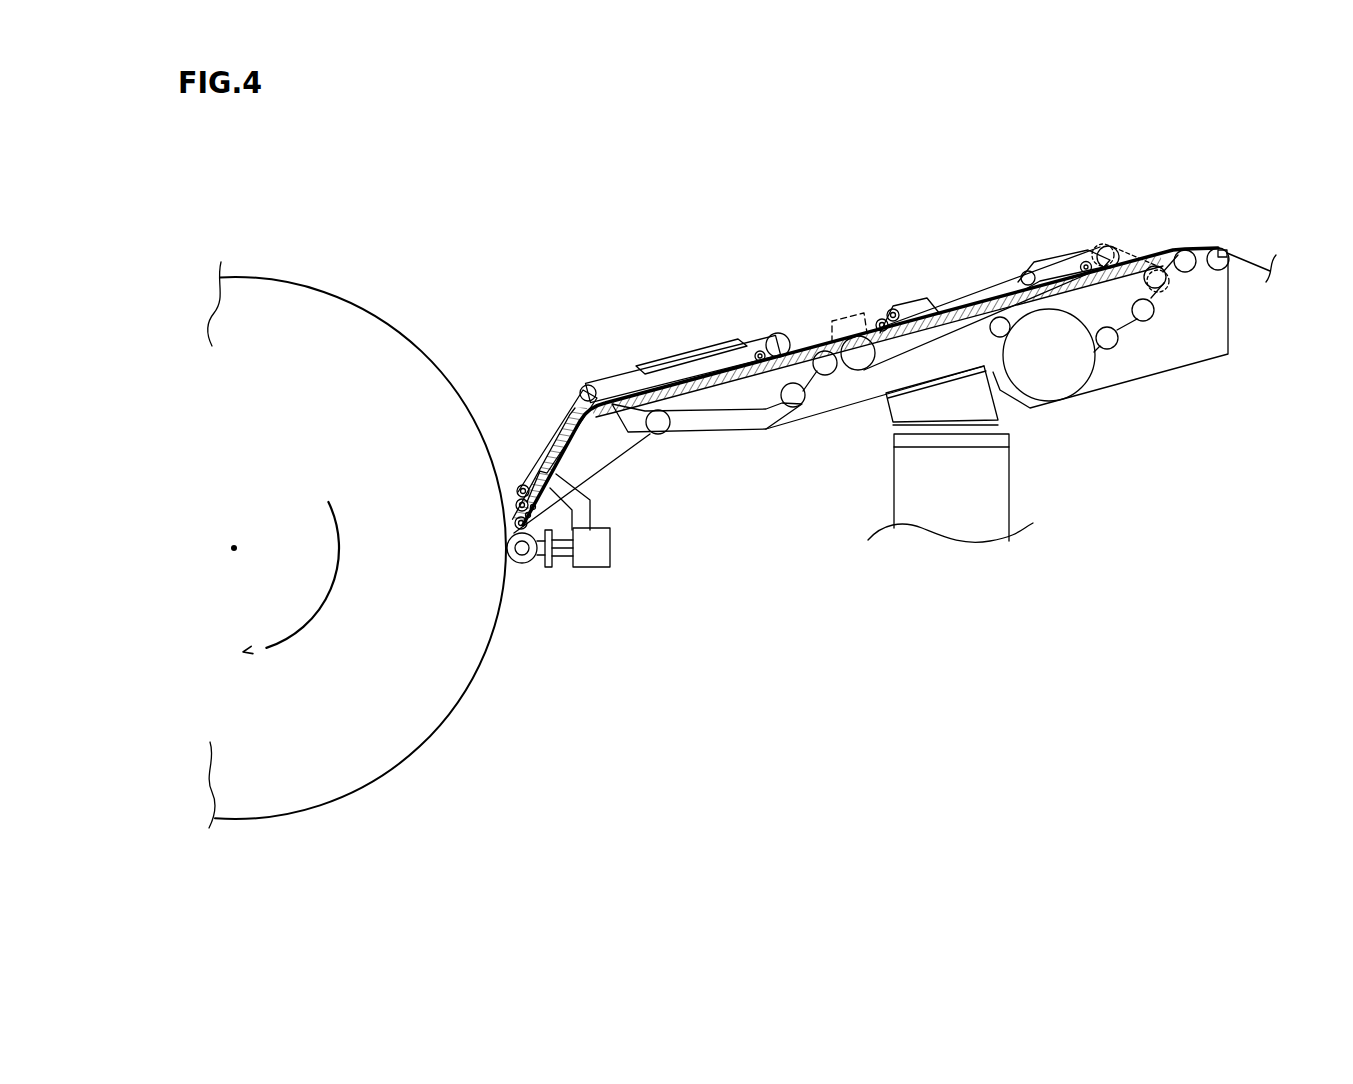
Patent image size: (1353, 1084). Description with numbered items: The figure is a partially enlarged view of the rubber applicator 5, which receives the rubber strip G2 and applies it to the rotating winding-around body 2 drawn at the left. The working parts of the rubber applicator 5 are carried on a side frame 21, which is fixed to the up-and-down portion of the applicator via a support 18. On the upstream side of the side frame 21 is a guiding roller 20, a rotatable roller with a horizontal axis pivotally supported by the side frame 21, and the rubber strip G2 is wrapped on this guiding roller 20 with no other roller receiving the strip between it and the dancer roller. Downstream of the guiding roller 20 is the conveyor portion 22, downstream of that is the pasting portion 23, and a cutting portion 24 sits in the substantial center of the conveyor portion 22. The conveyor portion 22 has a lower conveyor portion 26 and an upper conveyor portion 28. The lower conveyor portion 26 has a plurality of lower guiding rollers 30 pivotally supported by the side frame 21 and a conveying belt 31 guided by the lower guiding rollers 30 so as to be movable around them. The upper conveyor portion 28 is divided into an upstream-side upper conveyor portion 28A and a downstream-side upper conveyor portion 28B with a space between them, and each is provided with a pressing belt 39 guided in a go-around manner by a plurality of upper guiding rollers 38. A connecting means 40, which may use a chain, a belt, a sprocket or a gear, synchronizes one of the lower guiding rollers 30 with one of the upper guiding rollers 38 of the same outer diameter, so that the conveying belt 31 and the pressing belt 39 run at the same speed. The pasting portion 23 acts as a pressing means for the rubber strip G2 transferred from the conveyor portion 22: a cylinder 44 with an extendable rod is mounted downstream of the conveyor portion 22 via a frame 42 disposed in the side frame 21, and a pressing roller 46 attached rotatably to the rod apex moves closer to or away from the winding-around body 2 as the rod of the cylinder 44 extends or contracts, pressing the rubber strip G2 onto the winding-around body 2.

The winding-around body 2 is at (352, 290).
The rubber applicator 5 is at (866, 338).
The support 18 is at (998, 482).
The guiding roller 20 is at (1220, 248).
The side frame 21 is at (1207, 350).
The conveyor portion 22 is at (986, 249).
The pasting portion 23 is at (624, 569).
The cutting portion 24 is at (848, 312).
The lower conveyor portion 26 is at (1105, 320).
The upper conveyor portion 28 is at (807, 351).
The upstream-side upper conveyor portion 28A is at (953, 278).
The downstream-side upper conveyor portion 28B is at (677, 346).
The lower guiding roller 30 is at (826, 376).
The conveying belt 31 is at (1127, 327).
The upper guiding roller 38 is at (772, 334).
The pressing belt 39 is at (992, 280).
The connecting means 40 is at (800, 342).
The frame 42 is at (615, 502).
The cylinder 44 is at (598, 567).
The pressing roller 46 is at (522, 568).
The rubber strip G2 is at (1247, 262).